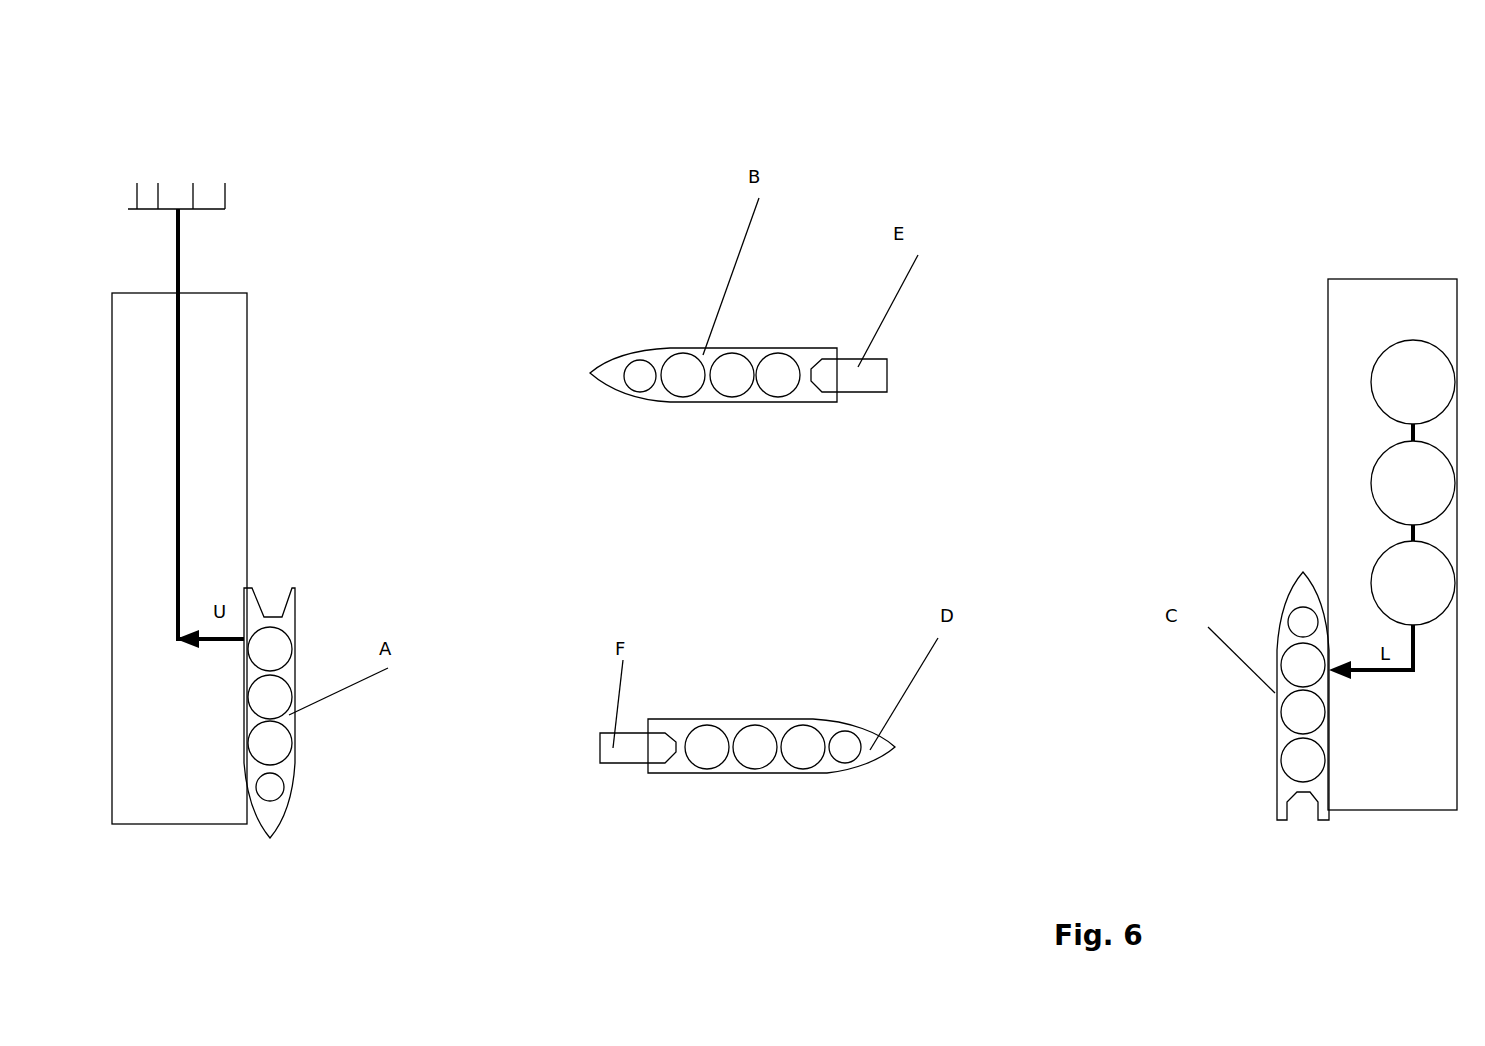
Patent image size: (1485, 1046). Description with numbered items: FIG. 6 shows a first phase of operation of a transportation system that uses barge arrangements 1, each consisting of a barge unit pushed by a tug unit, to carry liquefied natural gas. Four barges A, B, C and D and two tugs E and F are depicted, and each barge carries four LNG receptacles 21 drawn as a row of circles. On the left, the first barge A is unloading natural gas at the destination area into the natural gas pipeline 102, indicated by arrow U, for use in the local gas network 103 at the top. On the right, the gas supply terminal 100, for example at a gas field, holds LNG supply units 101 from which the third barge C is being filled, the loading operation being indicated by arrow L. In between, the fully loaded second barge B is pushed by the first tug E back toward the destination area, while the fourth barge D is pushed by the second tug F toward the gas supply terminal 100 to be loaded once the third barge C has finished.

The barge arrangement 1 is at (814, 304).
The LNG receptacle 21 is at (266, 783).
The gas supply terminal 100 is at (1363, 264).
The LNG supply unit 101 is at (1410, 358).
The natural gas pipeline 102 is at (182, 420).
The local gas network 103 is at (180, 170).